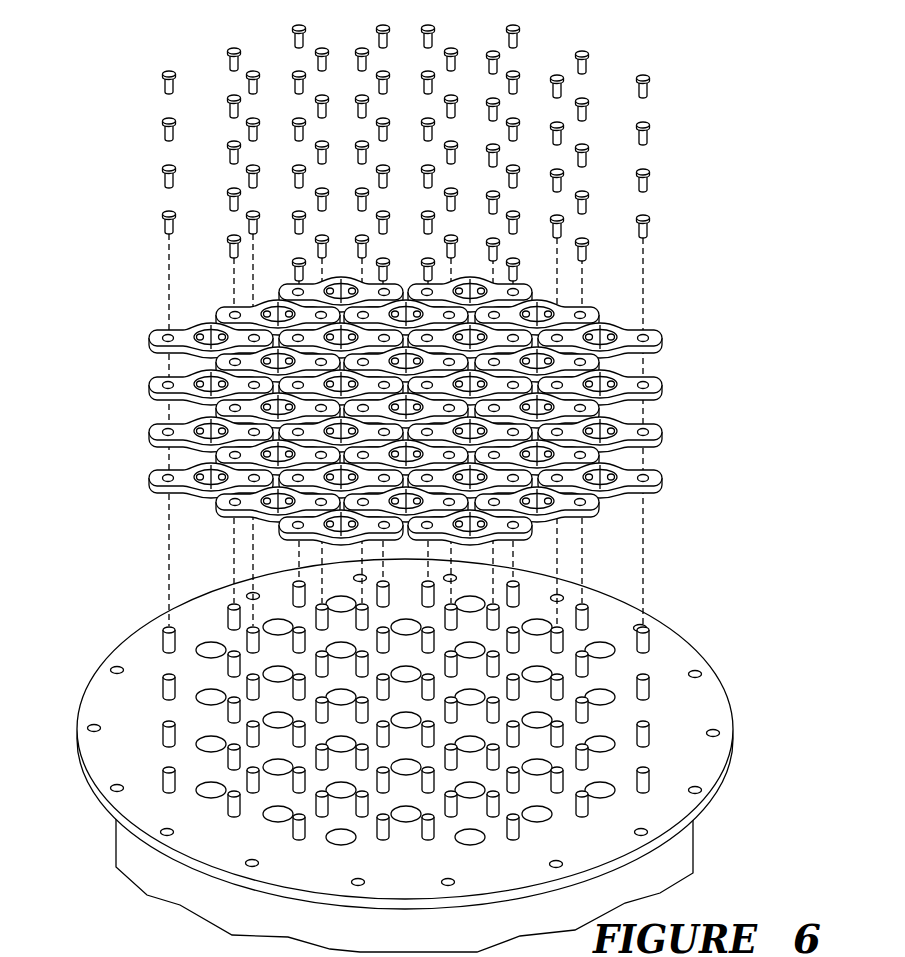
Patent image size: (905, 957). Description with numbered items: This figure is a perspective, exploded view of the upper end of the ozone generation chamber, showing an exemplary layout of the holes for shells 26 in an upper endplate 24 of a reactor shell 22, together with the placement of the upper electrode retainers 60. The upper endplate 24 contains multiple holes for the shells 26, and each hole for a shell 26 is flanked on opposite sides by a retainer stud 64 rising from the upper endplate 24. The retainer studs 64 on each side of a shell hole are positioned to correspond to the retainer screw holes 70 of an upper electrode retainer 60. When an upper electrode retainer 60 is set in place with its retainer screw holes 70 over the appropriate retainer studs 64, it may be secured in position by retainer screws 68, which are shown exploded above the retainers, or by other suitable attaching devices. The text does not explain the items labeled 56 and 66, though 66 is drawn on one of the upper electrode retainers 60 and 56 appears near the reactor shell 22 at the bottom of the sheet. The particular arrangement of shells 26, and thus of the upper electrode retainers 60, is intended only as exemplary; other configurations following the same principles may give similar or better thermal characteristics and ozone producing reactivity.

The reactor shell 22 is at (116, 843).
The upper endplate 24 is at (733, 734).
The shell 26 is at (197, 690).
The support 56 is at (80, 956).
The upper electrode retainer 60 is at (440, 411).
The retainer stud 64 is at (650, 646).
The clamp body 66 is at (640, 428).
The retainer screw 68 is at (649, 134).
The retainer screw hole 70 is at (648, 480).